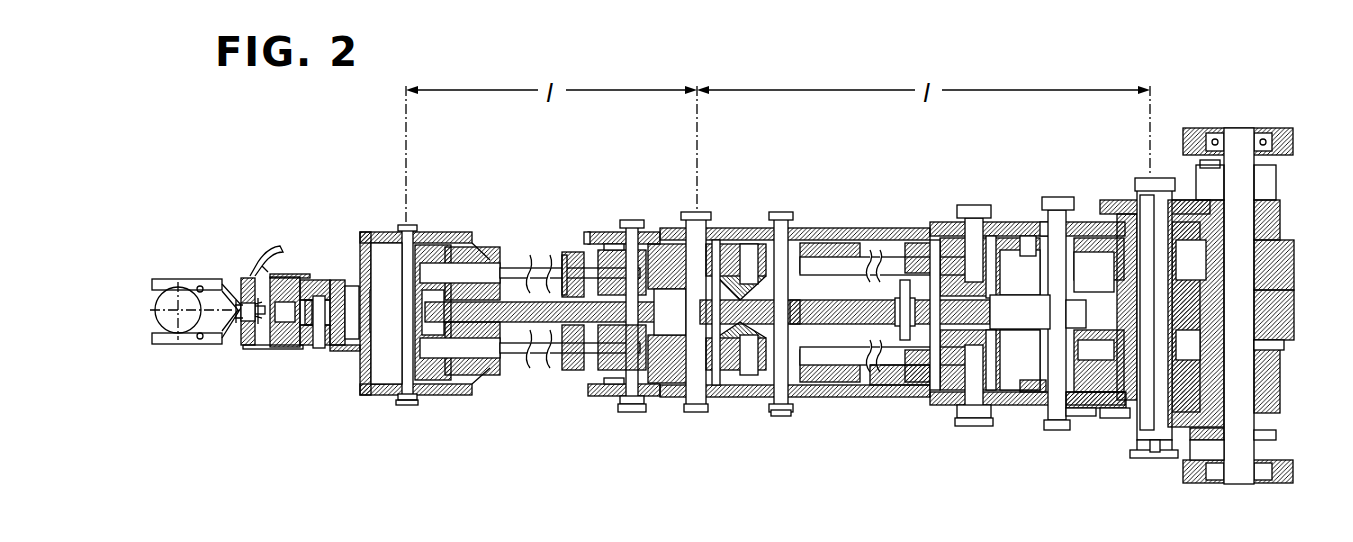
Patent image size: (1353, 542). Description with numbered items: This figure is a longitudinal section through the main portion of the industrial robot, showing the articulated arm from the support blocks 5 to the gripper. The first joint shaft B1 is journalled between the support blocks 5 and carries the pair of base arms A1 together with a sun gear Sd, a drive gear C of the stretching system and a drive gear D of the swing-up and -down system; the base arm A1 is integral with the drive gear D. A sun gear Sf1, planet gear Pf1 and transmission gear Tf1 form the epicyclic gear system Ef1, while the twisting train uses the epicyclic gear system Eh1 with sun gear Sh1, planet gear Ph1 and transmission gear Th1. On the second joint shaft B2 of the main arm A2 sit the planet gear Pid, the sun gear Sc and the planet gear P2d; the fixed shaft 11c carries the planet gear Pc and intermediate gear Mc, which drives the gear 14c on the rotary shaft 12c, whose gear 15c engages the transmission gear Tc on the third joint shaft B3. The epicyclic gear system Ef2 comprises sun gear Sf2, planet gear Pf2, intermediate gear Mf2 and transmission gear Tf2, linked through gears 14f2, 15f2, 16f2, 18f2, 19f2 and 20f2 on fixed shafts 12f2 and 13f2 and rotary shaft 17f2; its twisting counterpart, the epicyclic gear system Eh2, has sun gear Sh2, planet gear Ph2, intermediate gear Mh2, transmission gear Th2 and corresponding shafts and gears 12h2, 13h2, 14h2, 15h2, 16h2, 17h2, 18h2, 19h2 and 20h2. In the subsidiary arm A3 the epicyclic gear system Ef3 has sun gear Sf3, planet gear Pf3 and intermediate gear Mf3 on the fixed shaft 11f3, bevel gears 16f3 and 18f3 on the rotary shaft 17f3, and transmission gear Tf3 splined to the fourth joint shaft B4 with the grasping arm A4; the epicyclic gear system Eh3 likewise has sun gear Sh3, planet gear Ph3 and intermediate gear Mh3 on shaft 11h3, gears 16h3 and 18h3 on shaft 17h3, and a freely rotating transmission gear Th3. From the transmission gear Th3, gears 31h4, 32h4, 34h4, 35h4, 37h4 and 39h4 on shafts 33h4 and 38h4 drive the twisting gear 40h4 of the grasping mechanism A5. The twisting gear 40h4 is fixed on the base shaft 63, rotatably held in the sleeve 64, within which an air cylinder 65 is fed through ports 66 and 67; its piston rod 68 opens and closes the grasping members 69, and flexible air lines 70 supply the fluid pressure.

The grasping members 69 is at (174, 280).
The gripper linkage 68 is at (220, 300).
The grasping mechanism A5 is at (222, 262).
The base shaft 63 is at (248, 290).
The flexible air lines 70 is at (278, 250).
The circular port 67 is at (280, 340).
The circular port 66 is at (250, 342).
The sleeve 64 is at (245, 345).
The air cylinder 65 is at (312, 345).
The gear 39h4 is at (300, 352).
The gear 37h4 is at (320, 348).
The twisting gear 40h4 is at (290, 276).
The shaft 38h4 is at (336, 282).
The gear 32h4 is at (352, 288).
The gear 35h4 is at (350, 352).
The shaft 33h4 is at (378, 290).
The gear 34h4 is at (380, 398).
The gear 31h4 is at (440, 292).
The gear 18h3 is at (465, 262).
The gear 18f3 is at (472, 378).
The rotary shaft 17h3 is at (532, 262).
The rotary shaft 17f3 is at (542, 360).
The grasping arm A4 is at (462, 358).
The transmission gear Th3 is at (402, 246).
The transmission gear Tf3 is at (408, 404).
The fourth joint shaft B4 is at (425, 390).
The subsidiary arm A3 is at (545, 264).
The bevel gear 16h3 is at (572, 254).
The bevel gear 16f3 is at (572, 372).
The intermediate gear Mh3 is at (624, 262).
The intermediate gear Mf3 is at (606, 400).
The planet gear Ph3 is at (634, 234).
The planet gear Pf3 is at (612, 398).
The epicyclic gear system Eh3 is at (595, 198).
The epicyclic gear system Ef3 is at (617, 438).
The fixed shaft 11h3 is at (658, 250).
The fixed shaft 11f3 is at (650, 400).
The transmission gear Tc is at (670, 312).
The sun gear Sh3 is at (694, 214).
The sun gear Sf3 is at (682, 404).
The transmission gear Th2 is at (718, 244).
The transmission gear Tf2 is at (706, 400).
The bevel gear 19h2 is at (750, 246).
The bevel gear 19f2 is at (752, 398).
The gear 15c is at (724, 400).
The third joint shaft B3 is at (710, 398).
The fixed shaft 13h2 is at (782, 214).
The fixed shaft 13f2 is at (788, 416).
The gear 20h2 is at (826, 244).
The gear 20f2 is at (836, 398).
The bevel gear 18h2 is at (866, 258).
The bevel gear 18f2 is at (842, 388).
The rotary shaft 17h2 is at (876, 262).
The rotary shaft 17f2 is at (866, 400).
The rotary shaft 12c is at (904, 282).
The bevel gear 16h2 is at (922, 244).
The bevel gear 16f2 is at (918, 400).
The gear 14h2 is at (966, 212).
The gear 14f2 is at (958, 418).
The fixed shaft 12h2 is at (990, 236).
The fixed shaft 12f2 is at (985, 392).
The gear 14c is at (1010, 250).
The bevel gear 15h2 is at (1030, 236).
The bevel gear 15f2 is at (1010, 400).
The epicyclic gear system Eh2 is at (1045, 172).
The intermediate gear Mh2 is at (1056, 212).
The intermediate gear Mf2 is at (1054, 430).
The planet gear Pc is at (1012, 400).
The fixed shaft 11c is at (1044, 430).
The planet gear P2d is at (1099, 265).
The intermediate gear Mc is at (1087, 306).
The sun gear Sc is at (1099, 352).
The planet gear Pid is at (1072, 410).
The planet gear Pf2 is at (1080, 418).
The sun gear Sf2 is at (1112, 418).
The planet gear Ph2 is at (1104, 200).
The sun gear Sh2 is at (1126, 214).
The transmission gear Th1 is at (1155, 178).
The second joint shaft B2 is at (1178, 182).
The transmission gear Tf1 is at (1152, 452).
The epicyclic gear system Ef1 is at (1172, 460).
The epicyclic gear system Eh1 is at (1172, 158).
The support block 5 is at (1280, 484).
The first joint shaft B1 is at (1238, 484).
The planet gear Ph1 is at (1262, 174).
The sun gear Sh1 is at (1262, 202).
The base arm A1 is at (1278, 230).
The drive gear D is at (1294, 264).
The drive gear C is at (1294, 300).
The sun gear Sd is at (1284, 342).
The sun gear Sf1 is at (1270, 440).
The planet gear Pf1 is at (1198, 440).
The main arm A2 is at (932, 392).
The epicyclic gear system Ef2 is at (954, 474).